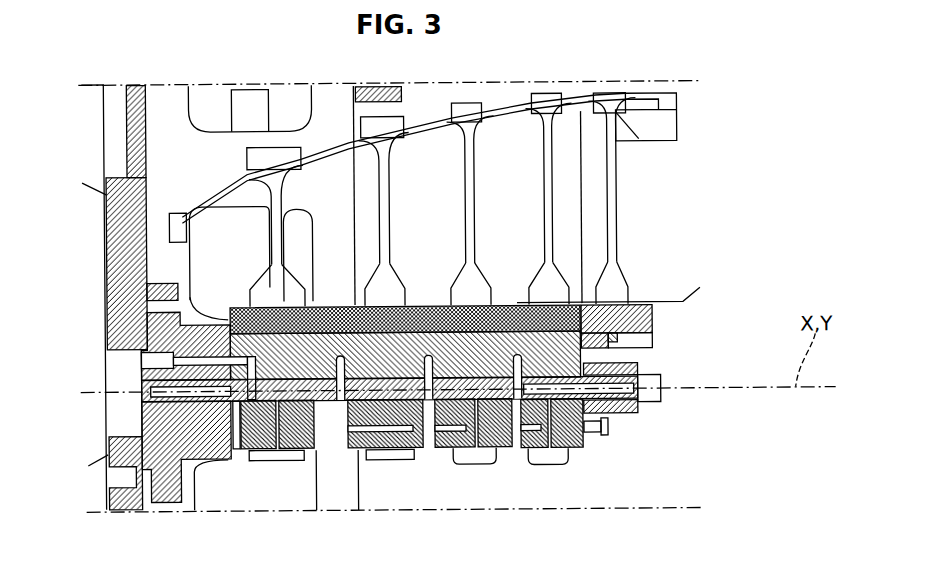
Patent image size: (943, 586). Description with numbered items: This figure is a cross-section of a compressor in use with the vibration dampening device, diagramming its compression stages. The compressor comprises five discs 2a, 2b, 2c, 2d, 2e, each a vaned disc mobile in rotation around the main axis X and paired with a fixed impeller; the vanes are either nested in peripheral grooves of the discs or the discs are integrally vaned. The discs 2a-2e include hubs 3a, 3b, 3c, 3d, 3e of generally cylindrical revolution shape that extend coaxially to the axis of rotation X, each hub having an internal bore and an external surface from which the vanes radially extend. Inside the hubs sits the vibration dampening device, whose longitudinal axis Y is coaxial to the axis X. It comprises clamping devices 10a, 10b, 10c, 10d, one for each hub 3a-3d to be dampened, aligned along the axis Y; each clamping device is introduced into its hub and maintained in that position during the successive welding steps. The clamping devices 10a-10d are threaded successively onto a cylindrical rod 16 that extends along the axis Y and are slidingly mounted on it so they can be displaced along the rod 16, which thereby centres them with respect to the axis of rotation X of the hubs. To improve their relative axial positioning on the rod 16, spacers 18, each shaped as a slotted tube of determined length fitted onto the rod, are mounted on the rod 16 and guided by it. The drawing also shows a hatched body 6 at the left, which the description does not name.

The disc 2a is at (277, 192).
The disc 2b is at (383, 181).
The disc 2c is at (470, 170).
The disc 2d is at (550, 167).
The disc 2e is at (614, 172).
The hub 3a is at (272, 286).
The hub 3b is at (390, 283).
The hub 3c is at (473, 285).
The hub 3d is at (550, 276).
The hub 3e is at (613, 276).
The rotor hub 6 is at (148, 420).
The clamping device 10a is at (300, 449).
The clamping device 10b is at (422, 448).
The clamping device 10c is at (494, 445).
The clamping device 10d is at (568, 449).
The rod 16 is at (650, 398).
The spacer 18 is at (236, 448).